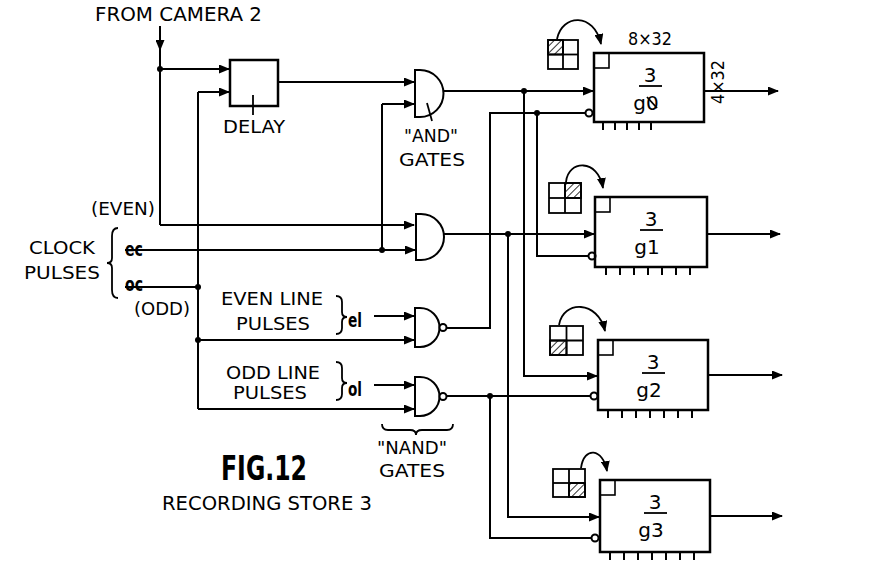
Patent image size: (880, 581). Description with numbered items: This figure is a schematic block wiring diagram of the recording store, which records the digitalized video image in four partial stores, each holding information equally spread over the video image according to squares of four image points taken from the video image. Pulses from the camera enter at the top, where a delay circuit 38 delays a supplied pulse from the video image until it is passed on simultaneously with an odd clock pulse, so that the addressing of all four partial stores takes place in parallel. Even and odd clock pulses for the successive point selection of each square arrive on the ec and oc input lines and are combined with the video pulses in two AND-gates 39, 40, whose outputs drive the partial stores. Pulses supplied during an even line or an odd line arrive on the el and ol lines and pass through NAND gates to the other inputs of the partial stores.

The delay circuit 38 is at (257, 72).
The AND-gate 39 is at (432, 83).
The AND-gate 40 is at (419, 176).